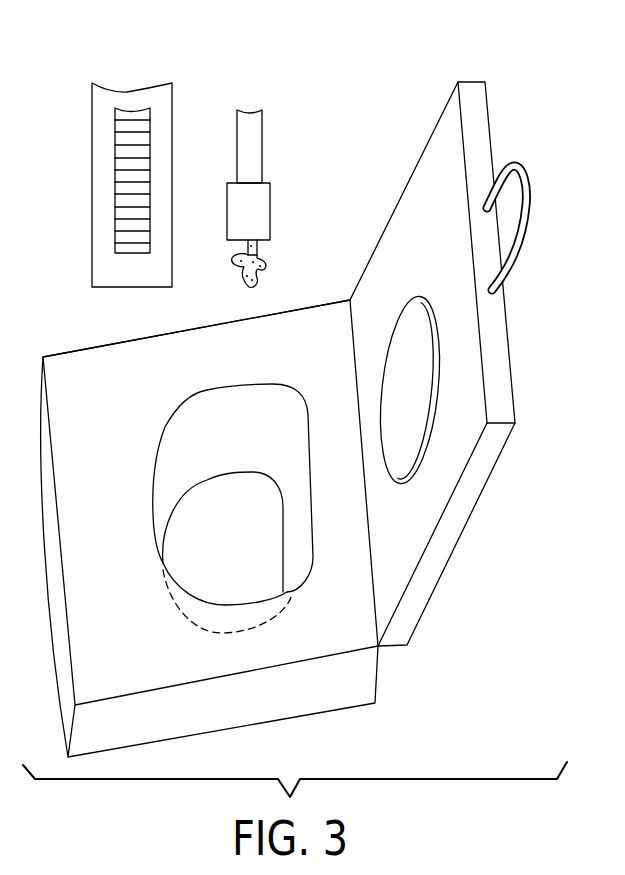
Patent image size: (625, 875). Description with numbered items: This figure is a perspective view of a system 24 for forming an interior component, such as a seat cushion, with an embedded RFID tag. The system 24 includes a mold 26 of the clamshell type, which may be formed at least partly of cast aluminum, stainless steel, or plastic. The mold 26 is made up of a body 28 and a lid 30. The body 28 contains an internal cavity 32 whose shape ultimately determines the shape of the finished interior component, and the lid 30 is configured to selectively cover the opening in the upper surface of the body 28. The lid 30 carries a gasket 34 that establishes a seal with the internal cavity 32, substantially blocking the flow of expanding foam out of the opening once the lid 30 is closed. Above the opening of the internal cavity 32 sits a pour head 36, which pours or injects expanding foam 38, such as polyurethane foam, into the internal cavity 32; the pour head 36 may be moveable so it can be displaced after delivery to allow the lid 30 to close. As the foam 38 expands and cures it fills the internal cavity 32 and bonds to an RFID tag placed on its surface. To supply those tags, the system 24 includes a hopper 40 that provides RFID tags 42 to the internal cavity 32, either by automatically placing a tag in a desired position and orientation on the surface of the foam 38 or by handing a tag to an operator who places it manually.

The system 24 is at (370, 84).
The mold 26 is at (341, 642).
The body 28 is at (72, 350).
The lid 30 is at (493, 140).
The internal cavity 32 is at (200, 531).
The gasket 34 is at (397, 317).
The pour head 36 is at (263, 140).
The expanding foam 38 is at (266, 268).
The hopper 40 is at (173, 118).
The RFID tags 42 is at (110, 175).